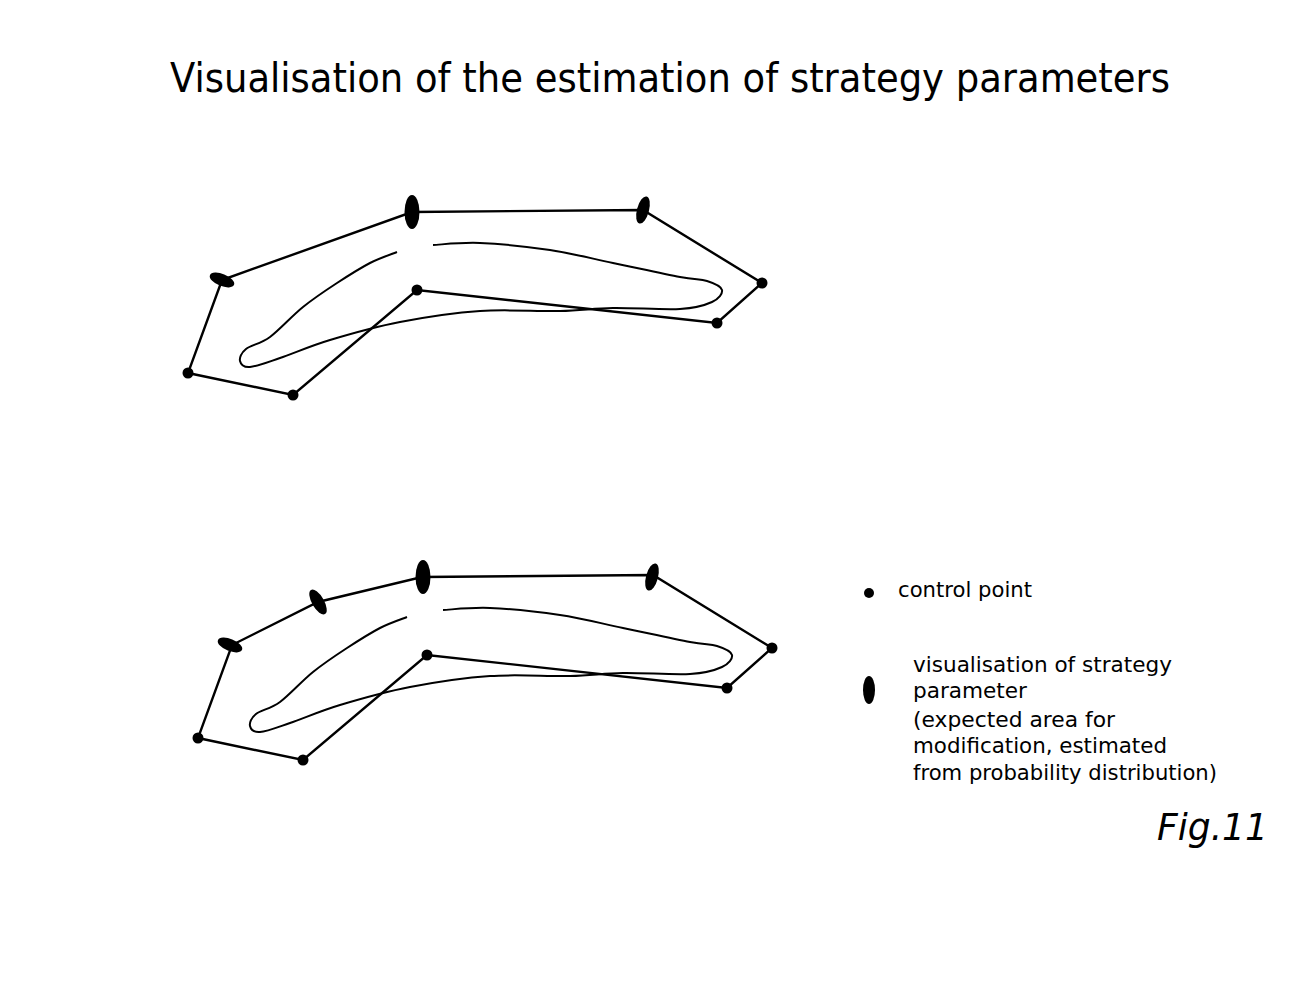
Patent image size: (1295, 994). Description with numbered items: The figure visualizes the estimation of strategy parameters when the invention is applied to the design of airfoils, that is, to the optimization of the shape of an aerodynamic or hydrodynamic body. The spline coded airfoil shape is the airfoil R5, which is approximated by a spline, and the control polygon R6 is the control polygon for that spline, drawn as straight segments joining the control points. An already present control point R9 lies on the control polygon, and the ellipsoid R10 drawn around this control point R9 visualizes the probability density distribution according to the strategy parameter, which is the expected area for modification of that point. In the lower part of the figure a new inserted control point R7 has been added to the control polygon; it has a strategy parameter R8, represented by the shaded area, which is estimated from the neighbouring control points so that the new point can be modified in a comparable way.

The airfoil R5 is at (658, 298).
The control polygon R6 is at (762, 283).
The new inserted control point R7 is at (320, 590).
The strategy parameter R8 is at (333, 588).
The control point R9 is at (401, 212).
The ellipsoid R10 is at (658, 182).